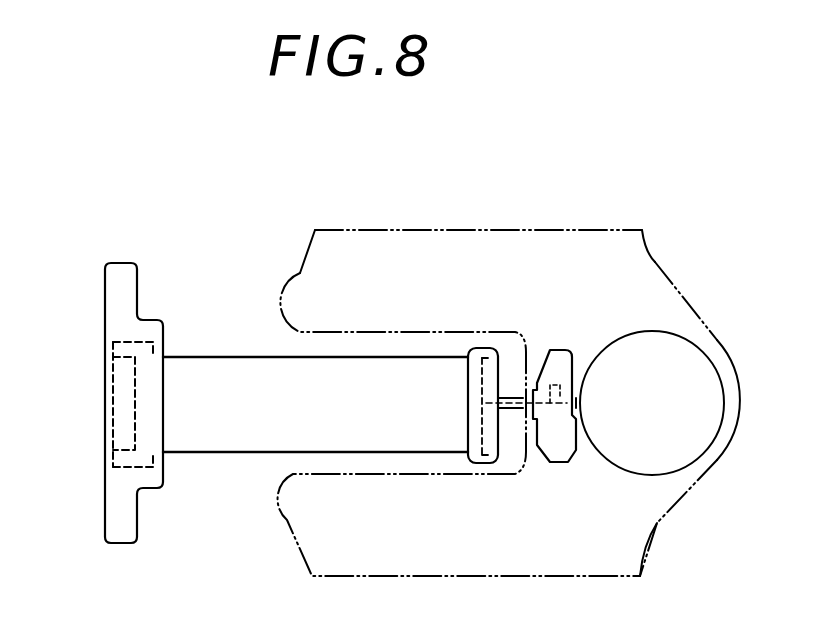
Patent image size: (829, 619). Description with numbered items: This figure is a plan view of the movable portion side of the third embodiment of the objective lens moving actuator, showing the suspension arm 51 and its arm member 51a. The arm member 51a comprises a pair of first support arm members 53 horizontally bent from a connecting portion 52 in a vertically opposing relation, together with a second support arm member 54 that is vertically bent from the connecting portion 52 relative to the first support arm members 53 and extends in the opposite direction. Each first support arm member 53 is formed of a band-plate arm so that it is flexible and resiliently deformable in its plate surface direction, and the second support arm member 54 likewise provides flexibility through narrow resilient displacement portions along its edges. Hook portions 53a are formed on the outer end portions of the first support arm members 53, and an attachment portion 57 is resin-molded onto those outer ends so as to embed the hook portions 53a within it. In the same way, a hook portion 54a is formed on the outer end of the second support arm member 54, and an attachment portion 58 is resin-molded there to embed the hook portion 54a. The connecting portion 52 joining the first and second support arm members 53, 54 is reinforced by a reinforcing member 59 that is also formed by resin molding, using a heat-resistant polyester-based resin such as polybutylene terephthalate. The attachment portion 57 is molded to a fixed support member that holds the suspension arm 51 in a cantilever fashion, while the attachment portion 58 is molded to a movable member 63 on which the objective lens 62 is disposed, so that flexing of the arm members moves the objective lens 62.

The suspension arm 51 is at (263, 312).
The arm member 51a is at (327, 357).
The connecting portion 52 is at (505, 375).
The first support arm member 53 is at (390, 377).
The hook portion 53a is at (105, 367).
The second support arm member 54 is at (520, 410).
The hook portion 54a is at (578, 403).
The attachment portion 57 is at (113, 303).
The attachment portion 58 is at (575, 355).
The reinforcing member 59 is at (500, 378).
The objective lens 62 is at (703, 370).
The movable member 63 is at (670, 513).